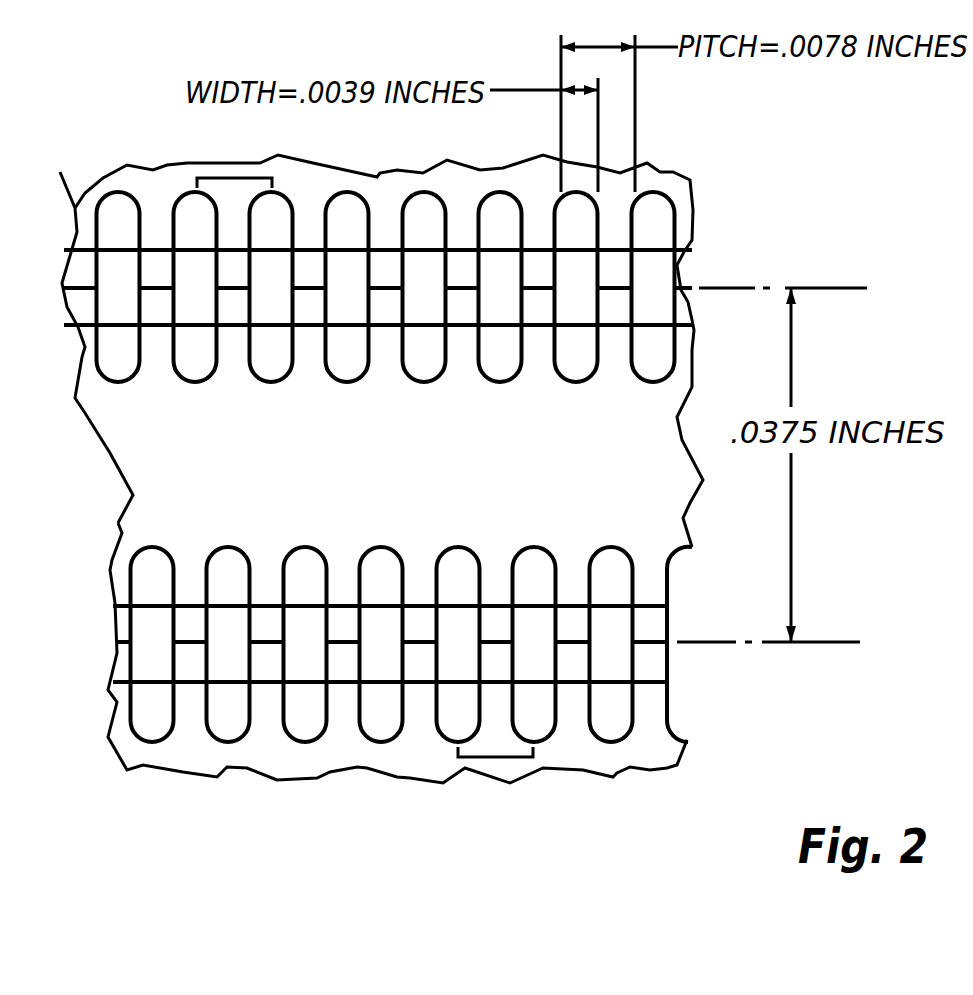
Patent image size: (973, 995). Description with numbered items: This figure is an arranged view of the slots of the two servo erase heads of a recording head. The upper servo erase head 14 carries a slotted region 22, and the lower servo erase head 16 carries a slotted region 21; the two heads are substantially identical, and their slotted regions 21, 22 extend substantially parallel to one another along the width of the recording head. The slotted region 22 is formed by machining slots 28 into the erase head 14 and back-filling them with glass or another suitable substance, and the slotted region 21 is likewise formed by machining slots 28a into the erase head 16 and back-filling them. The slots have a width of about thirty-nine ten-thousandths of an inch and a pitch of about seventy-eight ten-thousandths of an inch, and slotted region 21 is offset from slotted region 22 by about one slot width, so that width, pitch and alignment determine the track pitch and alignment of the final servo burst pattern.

The servo erase head 14 is at (60, 172).
The servo erase head 16 is at (80, 783).
The slotted region 21 is at (616, 752).
The slotted region 22 is at (575, 392).
The slots 28 is at (235, 178).
The slots 28a is at (497, 757).